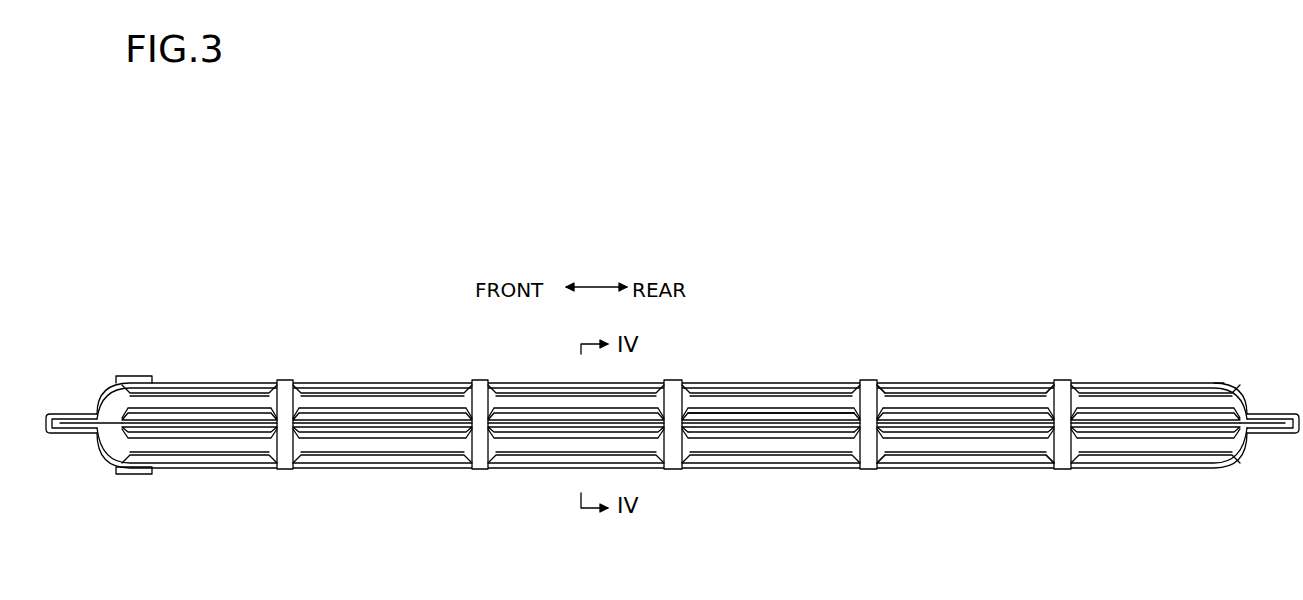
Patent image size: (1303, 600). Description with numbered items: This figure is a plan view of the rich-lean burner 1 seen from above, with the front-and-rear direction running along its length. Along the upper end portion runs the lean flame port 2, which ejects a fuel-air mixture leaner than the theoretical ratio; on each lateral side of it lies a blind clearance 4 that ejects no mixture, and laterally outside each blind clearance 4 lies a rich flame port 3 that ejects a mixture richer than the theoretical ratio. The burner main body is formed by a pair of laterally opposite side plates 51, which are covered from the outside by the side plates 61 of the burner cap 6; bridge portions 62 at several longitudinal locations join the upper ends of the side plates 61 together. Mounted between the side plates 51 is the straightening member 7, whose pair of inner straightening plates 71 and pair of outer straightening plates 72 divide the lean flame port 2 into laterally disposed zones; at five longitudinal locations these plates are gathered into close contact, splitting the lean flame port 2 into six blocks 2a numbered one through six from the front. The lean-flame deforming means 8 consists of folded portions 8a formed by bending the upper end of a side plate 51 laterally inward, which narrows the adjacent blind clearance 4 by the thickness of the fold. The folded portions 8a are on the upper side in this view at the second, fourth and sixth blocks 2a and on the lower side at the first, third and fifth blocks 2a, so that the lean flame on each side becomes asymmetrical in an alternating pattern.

The rich-lean burner 1 is at (283, 348).
The lean flame port 2 is at (977, 415).
The block 2a is at (695, 415).
The rich flame port 3 is at (950, 396).
The blind clearance 4 is at (915, 450).
The burner cap 6 is at (1220, 472).
The straightening member 7 is at (773, 425).
The lean-flame deforming means 8 is at (445, 380).
The folded portion 8a is at (348, 395).
The side plate 51 is at (1103, 400).
The side plate 61 is at (1175, 388).
The bridge portion 62 is at (1063, 402).
The inner straightening plate 71 is at (787, 417).
The outer straightening plate 72 is at (813, 408).